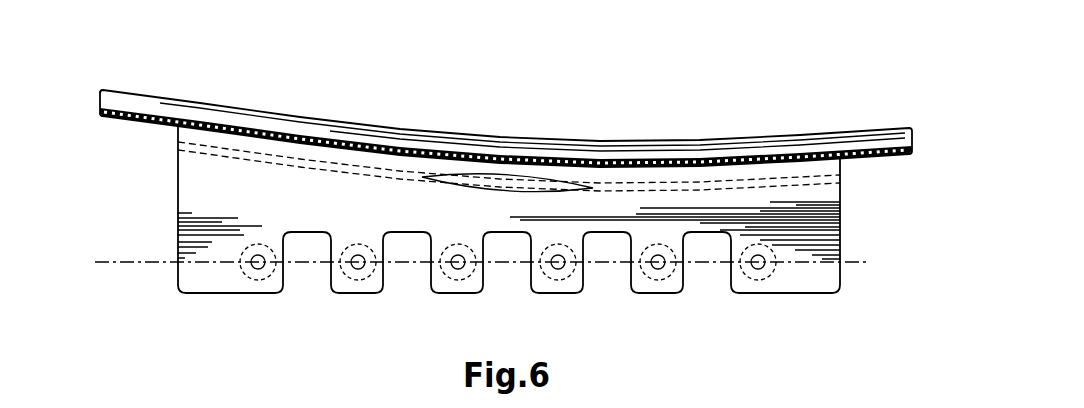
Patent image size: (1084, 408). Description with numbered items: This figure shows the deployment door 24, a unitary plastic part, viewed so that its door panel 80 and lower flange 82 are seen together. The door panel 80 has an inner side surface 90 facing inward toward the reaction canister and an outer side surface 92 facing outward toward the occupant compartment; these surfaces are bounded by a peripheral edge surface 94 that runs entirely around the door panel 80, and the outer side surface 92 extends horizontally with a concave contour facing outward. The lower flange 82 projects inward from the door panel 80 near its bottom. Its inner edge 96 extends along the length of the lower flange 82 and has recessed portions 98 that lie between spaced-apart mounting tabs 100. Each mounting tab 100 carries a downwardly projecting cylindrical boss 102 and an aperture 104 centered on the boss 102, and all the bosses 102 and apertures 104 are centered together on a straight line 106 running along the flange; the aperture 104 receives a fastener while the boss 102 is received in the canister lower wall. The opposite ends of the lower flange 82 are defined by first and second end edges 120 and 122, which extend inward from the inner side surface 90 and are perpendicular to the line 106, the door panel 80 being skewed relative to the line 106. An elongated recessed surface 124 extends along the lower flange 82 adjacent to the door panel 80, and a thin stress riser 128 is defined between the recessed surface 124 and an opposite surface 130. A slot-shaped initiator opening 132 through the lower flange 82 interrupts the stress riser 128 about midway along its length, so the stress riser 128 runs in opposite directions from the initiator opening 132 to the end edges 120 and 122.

The deployment door 24 is at (88, 72).
The door panel 80 is at (128, 78).
The lower flange 82 is at (387, 191).
The inner side surface 90 is at (132, 118).
The outer side surface 92 is at (156, 110).
The peripheral edge surface 94 is at (98, 100).
The inner edge 96 is at (237, 293).
The recessed portions 98 is at (430, 272).
The mounting tabs 100 is at (537, 285).
The cylindrical boss 102 is at (550, 290).
The aperture 104 is at (579, 274).
The straight line 106 is at (140, 262).
The first end edge 120 is at (177, 190).
The second end edge 122 is at (840, 212).
The recessed surface 124 is at (229, 158).
The stress riser 128 is at (276, 153).
The opposite surface 130 is at (329, 171).
The initiator opening 132 is at (489, 164).